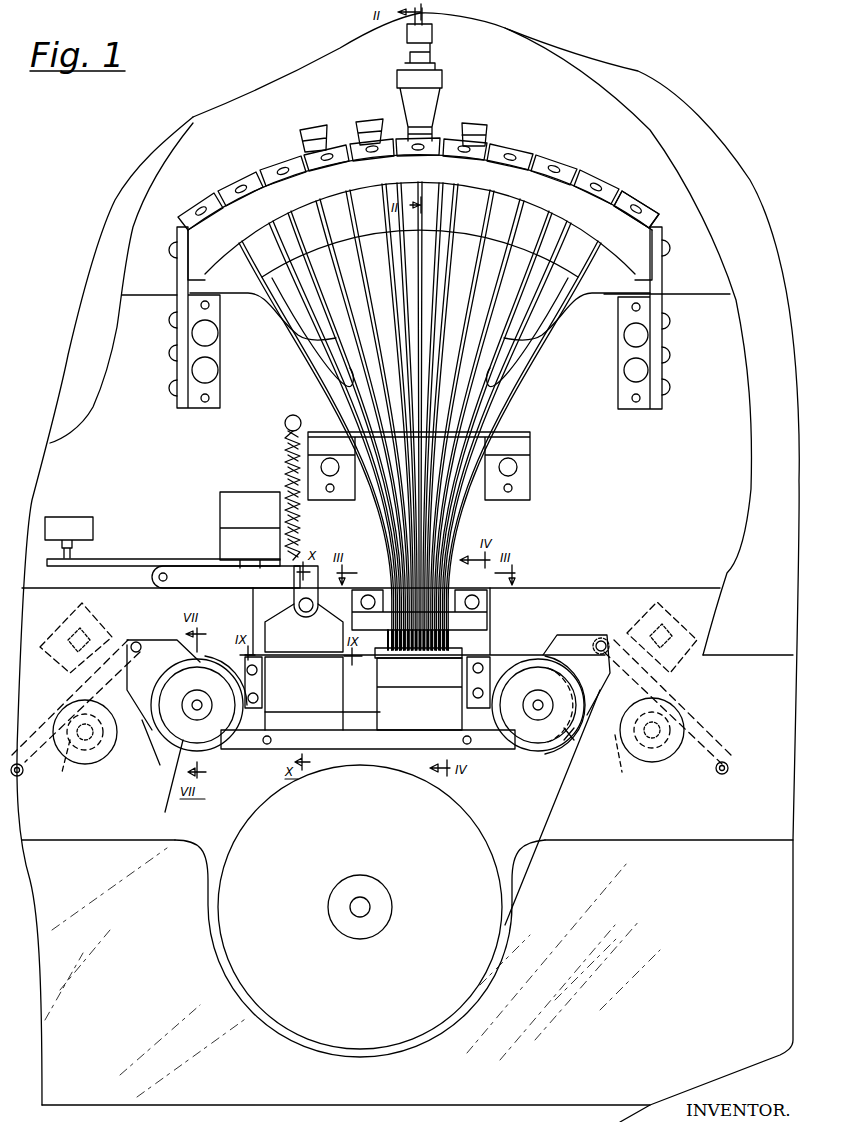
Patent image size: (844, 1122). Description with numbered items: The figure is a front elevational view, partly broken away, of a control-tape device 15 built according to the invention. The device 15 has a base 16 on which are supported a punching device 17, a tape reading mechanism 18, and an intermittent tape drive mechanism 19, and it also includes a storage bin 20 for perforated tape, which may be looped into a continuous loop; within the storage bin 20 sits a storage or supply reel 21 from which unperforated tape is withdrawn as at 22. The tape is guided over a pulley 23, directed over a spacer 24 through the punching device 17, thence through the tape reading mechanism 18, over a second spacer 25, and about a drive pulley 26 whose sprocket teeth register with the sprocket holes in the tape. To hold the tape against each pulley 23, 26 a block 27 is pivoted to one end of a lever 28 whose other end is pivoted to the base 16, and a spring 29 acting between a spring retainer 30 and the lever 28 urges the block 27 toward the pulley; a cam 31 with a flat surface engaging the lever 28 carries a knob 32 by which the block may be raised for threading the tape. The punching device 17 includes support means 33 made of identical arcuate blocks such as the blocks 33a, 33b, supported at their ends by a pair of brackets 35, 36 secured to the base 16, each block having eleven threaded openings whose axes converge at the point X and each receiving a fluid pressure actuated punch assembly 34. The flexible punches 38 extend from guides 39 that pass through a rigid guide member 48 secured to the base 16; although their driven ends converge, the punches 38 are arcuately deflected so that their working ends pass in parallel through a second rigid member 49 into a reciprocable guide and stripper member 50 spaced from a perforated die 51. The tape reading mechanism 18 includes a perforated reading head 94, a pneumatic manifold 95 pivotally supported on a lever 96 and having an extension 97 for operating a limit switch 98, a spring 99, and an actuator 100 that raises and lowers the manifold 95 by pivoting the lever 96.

The control-tape device 15 is at (689, 73).
The base 16 is at (662, 528).
The punching device 17 is at (486, 409).
The tape reading mechanism 18 is at (280, 700).
The intermittent tape drive mechanism 19 is at (170, 748).
The storage bin 20 is at (690, 839).
The storage or supply reel 21 is at (470, 833).
The tape withdrawal point 22 is at (542, 814).
The pulley 23 is at (570, 740).
The spacer 24 is at (500, 666).
The second spacer 25 is at (245, 662).
The drive pulley 26 is at (180, 713).
The block 27 is at (574, 640).
The lever 28 is at (46, 718).
The spring 29 is at (105, 645).
The spring retainer 30 is at (96, 610).
The cam 31 is at (64, 770).
The knob 32 is at (88, 755).
The support means 33 is at (608, 170).
The arcuate block 33a is at (628, 228).
The arcuate block 33b is at (650, 201).
The fluid pressure actuated punch assembly 34 is at (453, 110).
The bracket 35 is at (177, 281).
The bracket 36 is at (664, 293).
The flexible punch 38 is at (398, 548).
The guide 39 is at (392, 522).
The rigid guide member 48 is at (478, 437).
The second rigid member 49 is at (486, 622).
The reciprocable guide and stripper member 50 is at (382, 658).
The perforated die 51 is at (398, 664).
The perforated reading head 94 is at (316, 691).
The pneumatic manifold 95 is at (314, 640).
The lever 96 is at (253, 584).
The extension 97 is at (122, 560).
The limit switch 98 is at (75, 518).
The spring 99 is at (287, 472).
The actuator 100 is at (222, 512).
The point of convergence X is at (430, 433).